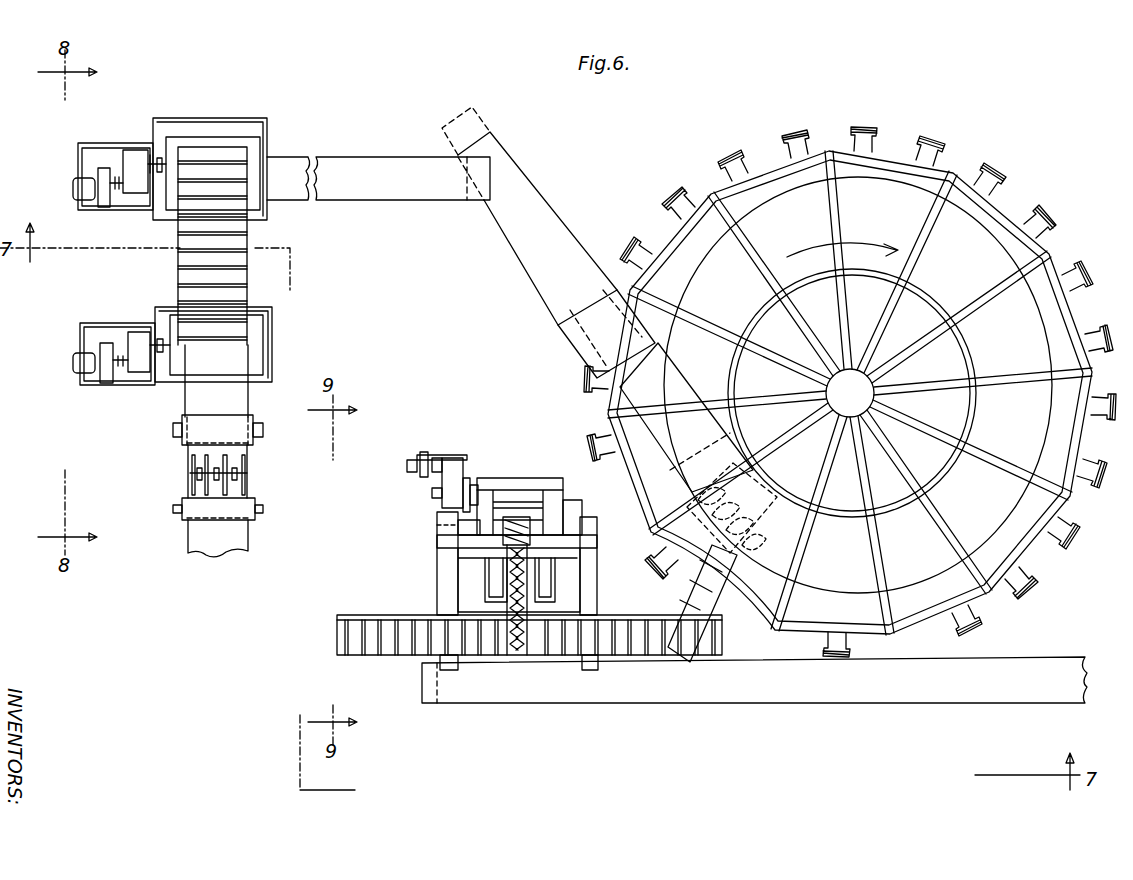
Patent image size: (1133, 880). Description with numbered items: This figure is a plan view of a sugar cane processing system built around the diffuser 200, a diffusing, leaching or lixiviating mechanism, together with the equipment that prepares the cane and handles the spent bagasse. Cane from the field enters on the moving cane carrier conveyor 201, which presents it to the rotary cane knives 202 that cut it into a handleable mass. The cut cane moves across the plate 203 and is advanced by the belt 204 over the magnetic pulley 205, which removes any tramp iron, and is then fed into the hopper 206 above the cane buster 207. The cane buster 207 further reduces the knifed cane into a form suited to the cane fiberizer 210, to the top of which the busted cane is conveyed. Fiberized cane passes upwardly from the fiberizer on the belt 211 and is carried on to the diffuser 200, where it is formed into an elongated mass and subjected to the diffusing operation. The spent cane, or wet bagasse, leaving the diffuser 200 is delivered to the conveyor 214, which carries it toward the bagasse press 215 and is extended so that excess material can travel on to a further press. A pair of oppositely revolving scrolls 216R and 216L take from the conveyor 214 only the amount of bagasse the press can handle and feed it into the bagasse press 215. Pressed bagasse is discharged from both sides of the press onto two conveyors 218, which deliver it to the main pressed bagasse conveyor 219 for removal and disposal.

The diffuser 200 is at (1006, 222).
The cane carrier conveyor 201 is at (198, 540).
The rotary cane knives 202 is at (205, 462).
The plate 203 is at (233, 488).
The belt 204 is at (223, 442).
The magnetic pulley 205 is at (178, 418).
The hopper 206 is at (237, 385).
The cane buster 207 is at (257, 322).
The cane fiberizer 210 is at (205, 120).
The belt 211 is at (378, 158).
The conveyor 214 is at (620, 660).
The bagasse press 215 is at (508, 495).
The scroll 216L is at (497, 604).
The scroll 216R is at (540, 604).
The conveyors 218 is at (445, 555).
The main pressed bagasse conveyor 219 is at (756, 703).